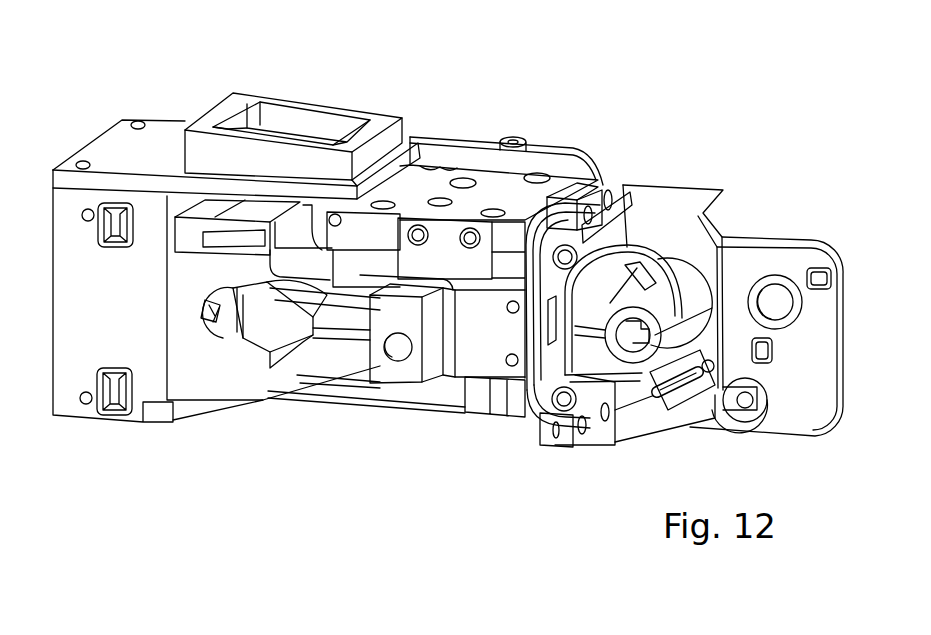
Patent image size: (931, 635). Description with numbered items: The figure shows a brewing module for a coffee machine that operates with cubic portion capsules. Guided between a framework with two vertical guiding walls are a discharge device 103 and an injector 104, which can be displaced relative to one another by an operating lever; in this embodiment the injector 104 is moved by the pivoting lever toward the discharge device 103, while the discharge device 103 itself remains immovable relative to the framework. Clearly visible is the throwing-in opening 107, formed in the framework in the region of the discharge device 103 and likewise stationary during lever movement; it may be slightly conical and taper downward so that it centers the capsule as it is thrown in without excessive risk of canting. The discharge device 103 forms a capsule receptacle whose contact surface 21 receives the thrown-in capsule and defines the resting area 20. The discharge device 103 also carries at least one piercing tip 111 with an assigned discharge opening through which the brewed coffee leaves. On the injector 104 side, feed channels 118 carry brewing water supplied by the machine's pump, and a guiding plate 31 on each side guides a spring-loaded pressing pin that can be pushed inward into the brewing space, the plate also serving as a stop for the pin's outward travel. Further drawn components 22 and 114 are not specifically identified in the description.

The resting area 20 is at (313, 342).
The contact surface 21 is at (307, 357).
The carriage plate 22 is at (388, 223).
The guiding plate 31 is at (400, 303).
The discharge device 103 is at (193, 360).
The injector 104 is at (493, 427).
The throwing-in opening 107 is at (298, 113).
The piercing tip 111 is at (213, 325).
The holder 114 is at (253, 358).
The feed channels 118 is at (655, 388).